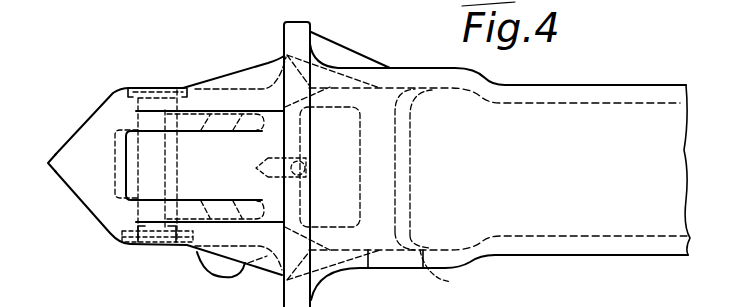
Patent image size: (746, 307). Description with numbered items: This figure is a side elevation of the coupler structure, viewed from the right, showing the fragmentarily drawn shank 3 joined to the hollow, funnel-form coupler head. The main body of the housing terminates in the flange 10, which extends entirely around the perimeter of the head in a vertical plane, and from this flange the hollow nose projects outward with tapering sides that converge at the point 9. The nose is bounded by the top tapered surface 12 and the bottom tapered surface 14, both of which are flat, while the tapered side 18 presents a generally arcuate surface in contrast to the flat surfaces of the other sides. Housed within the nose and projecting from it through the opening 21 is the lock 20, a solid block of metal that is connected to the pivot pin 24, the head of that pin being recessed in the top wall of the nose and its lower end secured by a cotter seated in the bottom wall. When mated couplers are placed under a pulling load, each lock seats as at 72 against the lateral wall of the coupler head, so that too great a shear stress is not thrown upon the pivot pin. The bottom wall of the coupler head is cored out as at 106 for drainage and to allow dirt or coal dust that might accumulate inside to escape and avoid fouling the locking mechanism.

The shank 3 is at (582, 113).
The point 9 is at (48, 163).
The flange 10 is at (303, 31).
The top tapered surface 12 is at (87, 122).
The bottom tapered surface 14 is at (61, 211).
The tapered side 18 is at (179, 166).
The lock 20 is at (268, 193).
The opening 21 is at (238, 112).
The pivot pin 24 is at (186, 88).
The lock seat 72 is at (113, 159).
The cored-out portion 106 is at (452, 273).